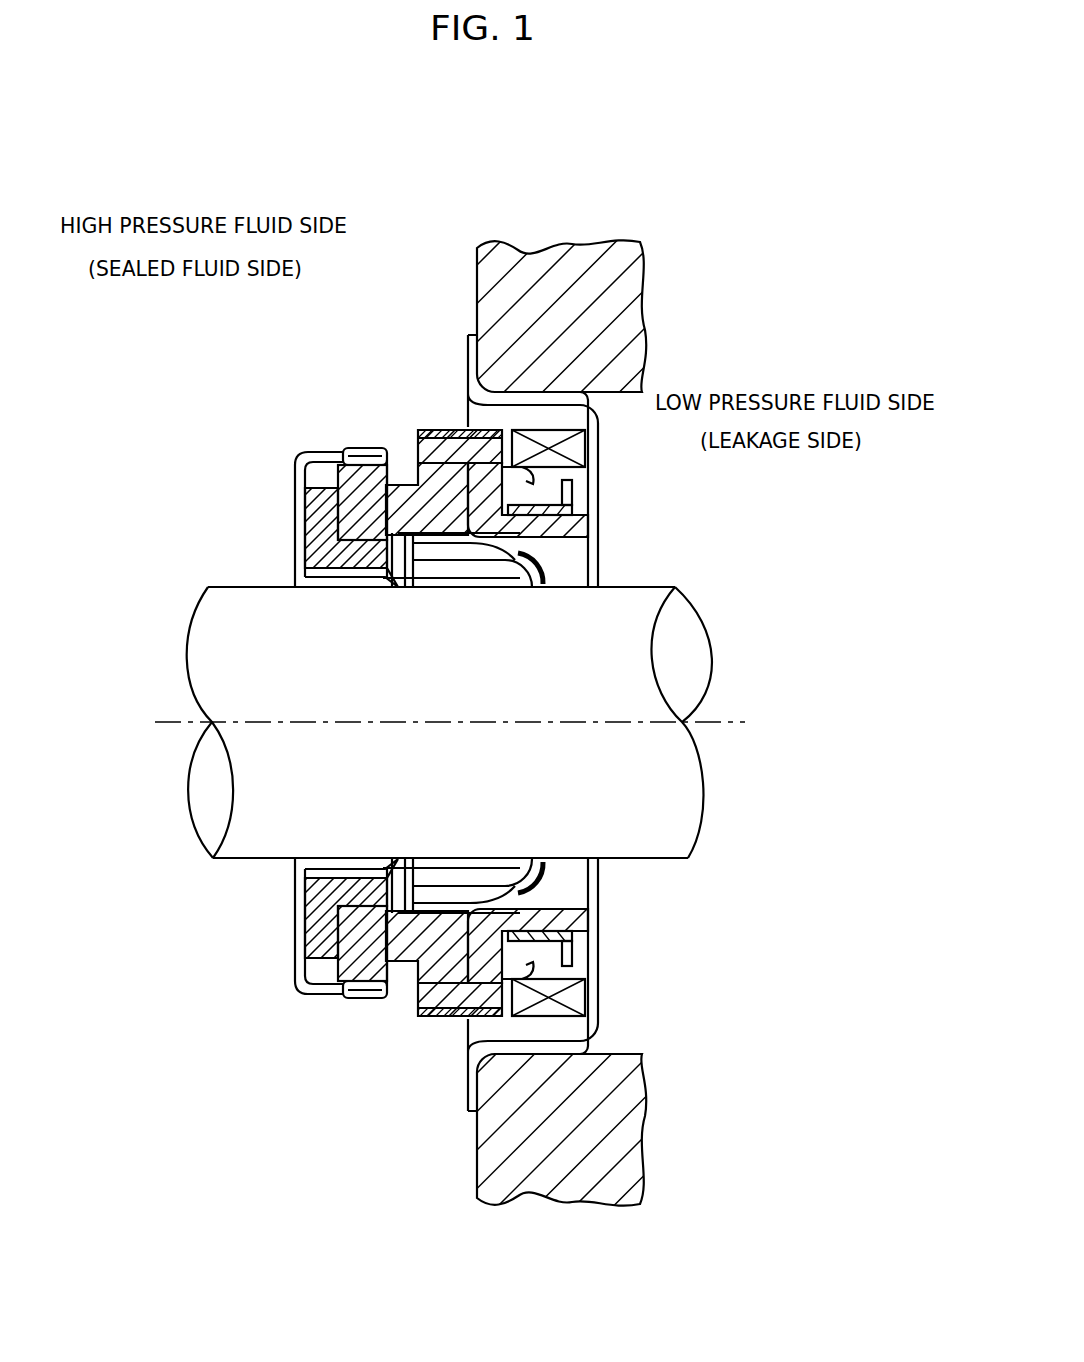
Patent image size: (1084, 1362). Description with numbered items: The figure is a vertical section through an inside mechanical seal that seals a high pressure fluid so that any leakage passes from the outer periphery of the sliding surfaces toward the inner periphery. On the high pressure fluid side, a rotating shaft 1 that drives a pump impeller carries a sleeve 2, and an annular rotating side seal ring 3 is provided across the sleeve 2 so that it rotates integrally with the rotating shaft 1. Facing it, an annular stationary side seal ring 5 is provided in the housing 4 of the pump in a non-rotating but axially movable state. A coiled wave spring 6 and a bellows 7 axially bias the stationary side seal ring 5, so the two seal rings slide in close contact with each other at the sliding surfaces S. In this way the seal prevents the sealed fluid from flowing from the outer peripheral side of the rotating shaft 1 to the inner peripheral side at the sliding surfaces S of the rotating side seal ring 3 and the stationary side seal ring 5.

The rotating shaft 1 is at (347, 690).
The sleeve 2 is at (306, 518).
The rotating side seal ring 3 is at (343, 465).
The housing 4 is at (546, 268).
The stationary side seal ring 5 is at (418, 487).
The coiled wave spring 6 is at (580, 452).
The bellows 7 is at (462, 432).
The sliding surfaces S is at (402, 548).